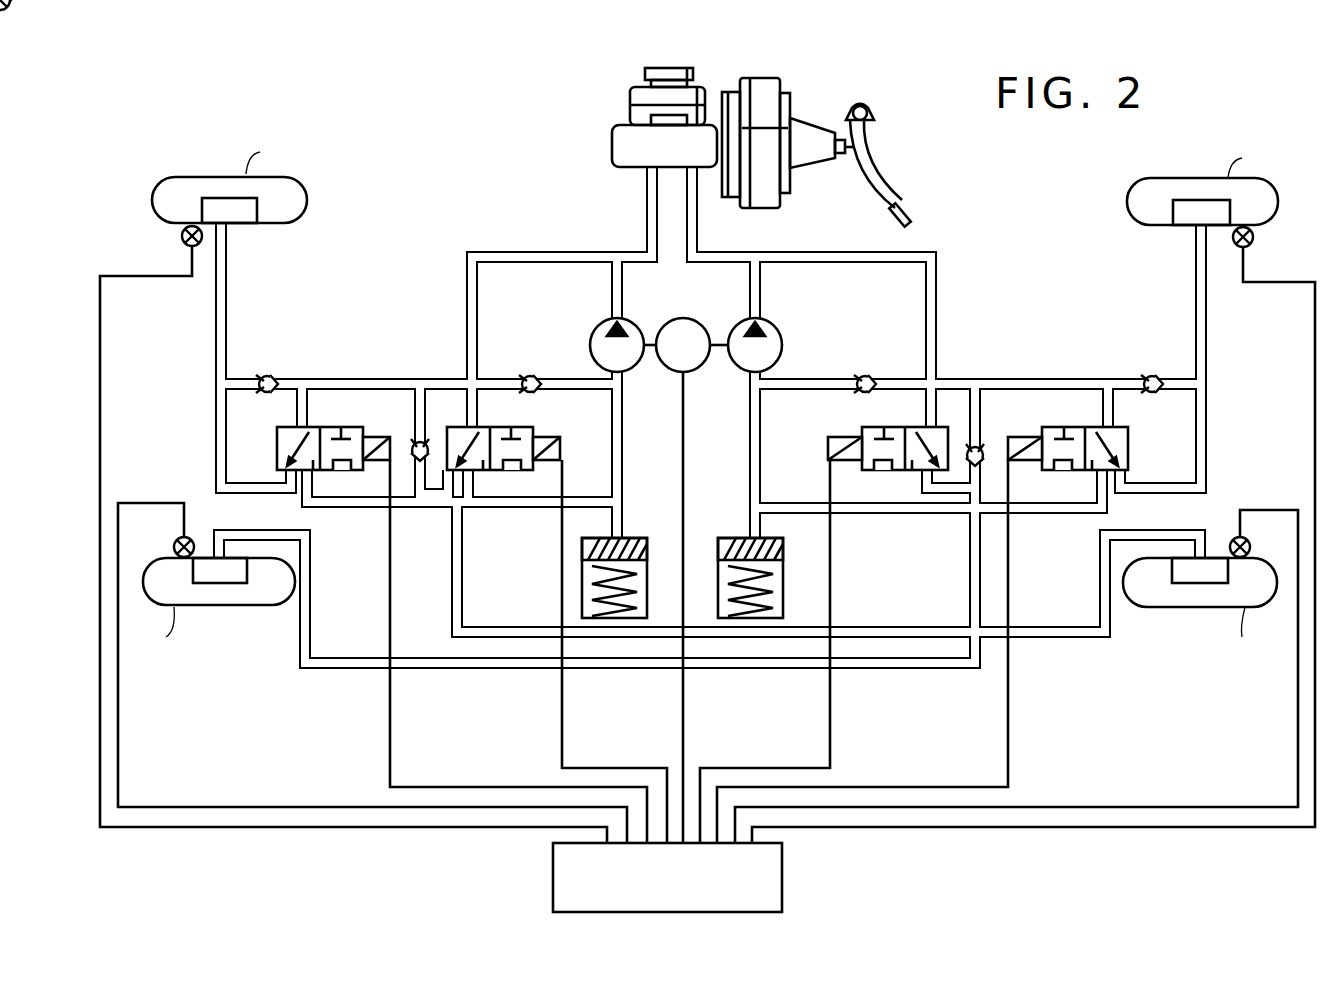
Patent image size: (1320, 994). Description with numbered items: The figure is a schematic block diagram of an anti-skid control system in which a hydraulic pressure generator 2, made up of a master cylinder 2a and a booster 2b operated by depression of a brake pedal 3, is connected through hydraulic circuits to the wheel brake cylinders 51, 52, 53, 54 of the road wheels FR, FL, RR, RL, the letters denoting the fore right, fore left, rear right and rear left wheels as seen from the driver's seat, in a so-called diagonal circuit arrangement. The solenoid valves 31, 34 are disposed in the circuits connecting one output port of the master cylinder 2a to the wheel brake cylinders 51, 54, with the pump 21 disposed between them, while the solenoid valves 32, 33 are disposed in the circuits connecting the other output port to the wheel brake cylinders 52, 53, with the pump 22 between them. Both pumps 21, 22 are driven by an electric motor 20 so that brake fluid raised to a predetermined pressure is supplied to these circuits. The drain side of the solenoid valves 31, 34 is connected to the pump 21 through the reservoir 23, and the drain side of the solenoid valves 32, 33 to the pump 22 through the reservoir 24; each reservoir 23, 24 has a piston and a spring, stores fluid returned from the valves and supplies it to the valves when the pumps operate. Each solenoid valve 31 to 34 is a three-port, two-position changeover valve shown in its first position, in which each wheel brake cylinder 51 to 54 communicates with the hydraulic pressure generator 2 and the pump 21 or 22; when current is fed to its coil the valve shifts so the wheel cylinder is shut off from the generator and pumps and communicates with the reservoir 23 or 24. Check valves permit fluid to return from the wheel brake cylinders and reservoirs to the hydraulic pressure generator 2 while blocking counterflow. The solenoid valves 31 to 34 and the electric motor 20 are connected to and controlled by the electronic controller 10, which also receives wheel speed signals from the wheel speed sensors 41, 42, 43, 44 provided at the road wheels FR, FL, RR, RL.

The hydraulic pressure generator 2 is at (704, 151).
The master cylinder 2a is at (612, 153).
The booster 2b is at (780, 205).
The brake pedal 3 is at (878, 152).
The electronic controller 10 is at (783, 875).
The electric motor 20 is at (686, 317).
The pump 21 is at (606, 320).
The pump 22 is at (776, 323).
The reservoir 23 is at (582, 580).
The reservoir 24 is at (783, 582).
The solenoid valve 31 is at (328, 427).
The solenoid valve 32 is at (888, 427).
The solenoid valve 33 is at (1084, 427).
The solenoid valve 34 is at (512, 427).
The wheel speed sensor 41 is at (180, 238).
The wheel speed sensor 42 is at (174, 541).
The wheel speed sensor 43 is at (1256, 240).
The wheel speed sensor 44 is at (1252, 545).
The wheel brake cylinder 51 is at (241, 224).
The wheel brake cylinder 52 is at (235, 584).
The wheel brake cylinder 53 is at (1180, 226).
The wheel brake cylinder 54 is at (1183, 586).
The road wheel FR is at (268, 157).
The road wheel FL is at (156, 628).
The road wheel RR is at (1246, 158).
The road wheel RL is at (1246, 628).